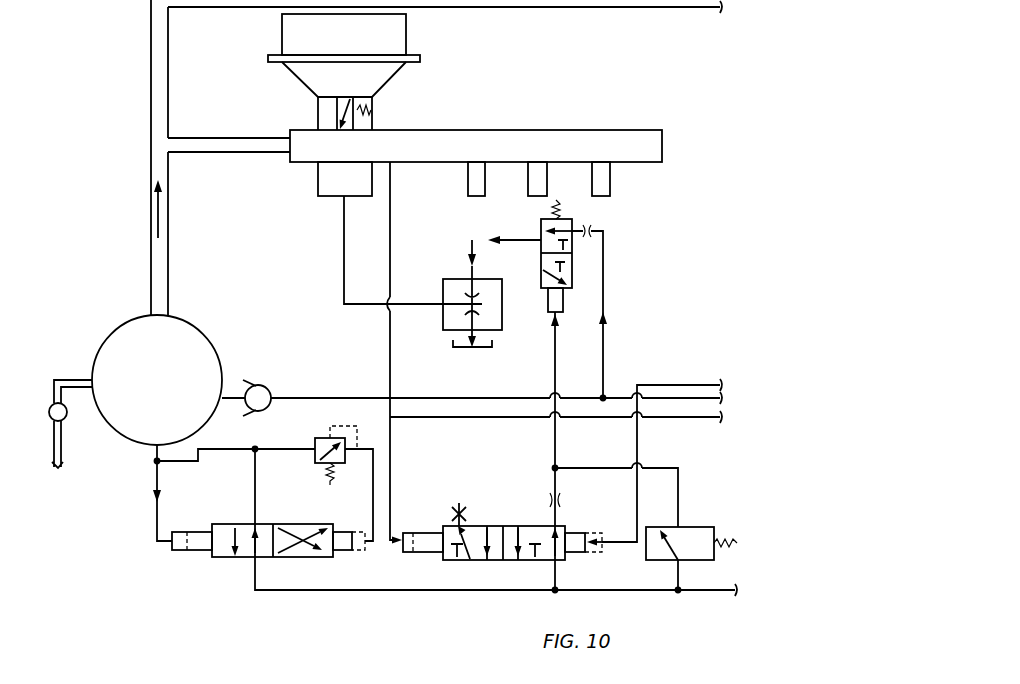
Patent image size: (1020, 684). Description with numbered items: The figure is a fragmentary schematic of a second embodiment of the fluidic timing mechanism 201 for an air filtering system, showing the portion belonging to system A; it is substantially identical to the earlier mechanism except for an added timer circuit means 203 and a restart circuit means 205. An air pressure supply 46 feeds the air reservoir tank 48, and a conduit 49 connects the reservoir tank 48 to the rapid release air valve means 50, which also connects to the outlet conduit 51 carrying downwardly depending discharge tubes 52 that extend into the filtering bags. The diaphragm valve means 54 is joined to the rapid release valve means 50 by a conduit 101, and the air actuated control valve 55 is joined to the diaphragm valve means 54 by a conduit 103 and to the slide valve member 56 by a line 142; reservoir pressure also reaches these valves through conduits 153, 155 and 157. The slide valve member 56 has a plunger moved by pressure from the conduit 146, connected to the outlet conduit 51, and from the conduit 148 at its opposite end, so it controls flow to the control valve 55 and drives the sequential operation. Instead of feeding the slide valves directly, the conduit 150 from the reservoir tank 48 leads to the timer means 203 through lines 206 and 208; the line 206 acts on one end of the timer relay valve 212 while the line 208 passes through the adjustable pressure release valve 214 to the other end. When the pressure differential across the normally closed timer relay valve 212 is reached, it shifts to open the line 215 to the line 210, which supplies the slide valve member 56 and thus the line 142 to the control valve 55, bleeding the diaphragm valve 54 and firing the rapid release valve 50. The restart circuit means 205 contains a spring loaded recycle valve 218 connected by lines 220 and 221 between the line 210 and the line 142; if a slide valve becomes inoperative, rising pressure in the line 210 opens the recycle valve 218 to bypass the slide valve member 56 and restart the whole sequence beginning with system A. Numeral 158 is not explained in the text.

The system A is at (425, 96).
The air pressure supply 46 is at (63, 447).
The air reservoir tank 48 is at (123, 432).
The conduit 49 is at (167, 145).
The rapid release air valve means 50 is at (387, 35).
The outlet conduit 51 is at (440, 140).
The discharge tubes 52 is at (537, 175).
The diaphragm valve means 54 is at (505, 312).
The air actuated control valve 55 is at (580, 252).
The slide valve member 56 is at (488, 524).
The conduit 101 is at (340, 218).
The conduit 103 is at (505, 238).
The line 142 is at (555, 352).
The conduit 146 is at (392, 455).
The conduit 148 is at (665, 384).
The conduit 150 is at (155, 462).
The conduit 153 is at (618, 397).
The conduit 155 is at (270, 388).
The conduit 157 is at (605, 263).
The conduit 158 is at (683, 420).
The fluidic timing mechanism 201 is at (122, 272).
The timer circuit means 203 is at (203, 560).
The restart circuit means 205 is at (693, 510).
The line 206 is at (153, 530).
The line 208 is at (237, 449).
The line 210 is at (385, 592).
The timer relay valve 212 is at (287, 550).
The pressure release valve 214 is at (320, 435).
The line 215 is at (257, 498).
The recycle valve 218 is at (700, 535).
The line 220 is at (680, 578).
The line 221 is at (590, 467).